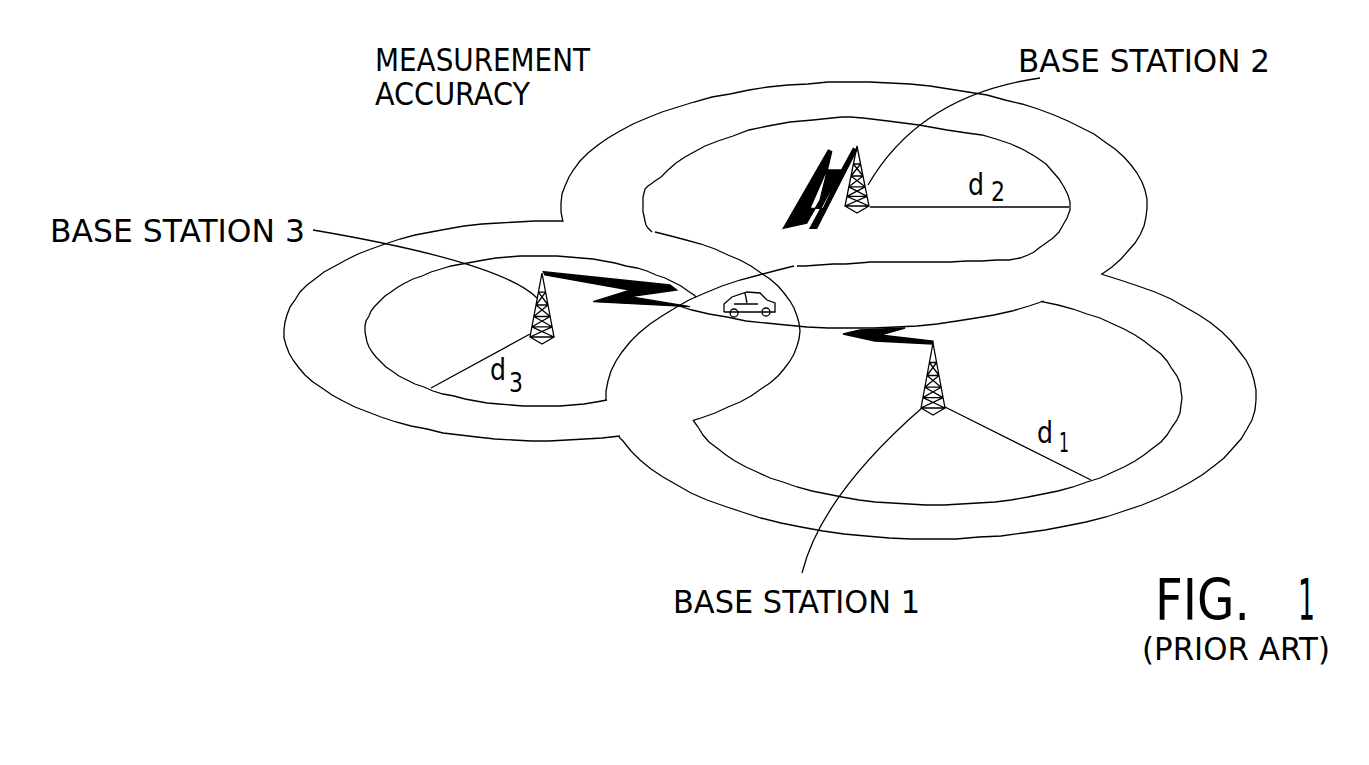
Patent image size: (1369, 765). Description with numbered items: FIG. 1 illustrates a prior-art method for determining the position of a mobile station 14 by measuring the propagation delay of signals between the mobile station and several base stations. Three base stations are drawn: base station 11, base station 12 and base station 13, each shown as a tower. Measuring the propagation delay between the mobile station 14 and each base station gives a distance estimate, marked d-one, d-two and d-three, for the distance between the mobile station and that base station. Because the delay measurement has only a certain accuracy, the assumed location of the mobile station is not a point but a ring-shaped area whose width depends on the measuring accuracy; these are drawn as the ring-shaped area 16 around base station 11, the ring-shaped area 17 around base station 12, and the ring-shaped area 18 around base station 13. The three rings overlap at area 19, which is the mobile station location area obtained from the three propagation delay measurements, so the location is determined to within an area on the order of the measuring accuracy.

The base station 11 is at (940, 378).
The base station 12 is at (862, 175).
The base station 13 is at (540, 287).
The mobile station 14 is at (772, 380).
The ring-shaped area 16 is at (1172, 299).
The ring-shaped area 17 is at (1120, 153).
The ring-shaped area 18 is at (437, 430).
The intersection area 19 is at (779, 315).